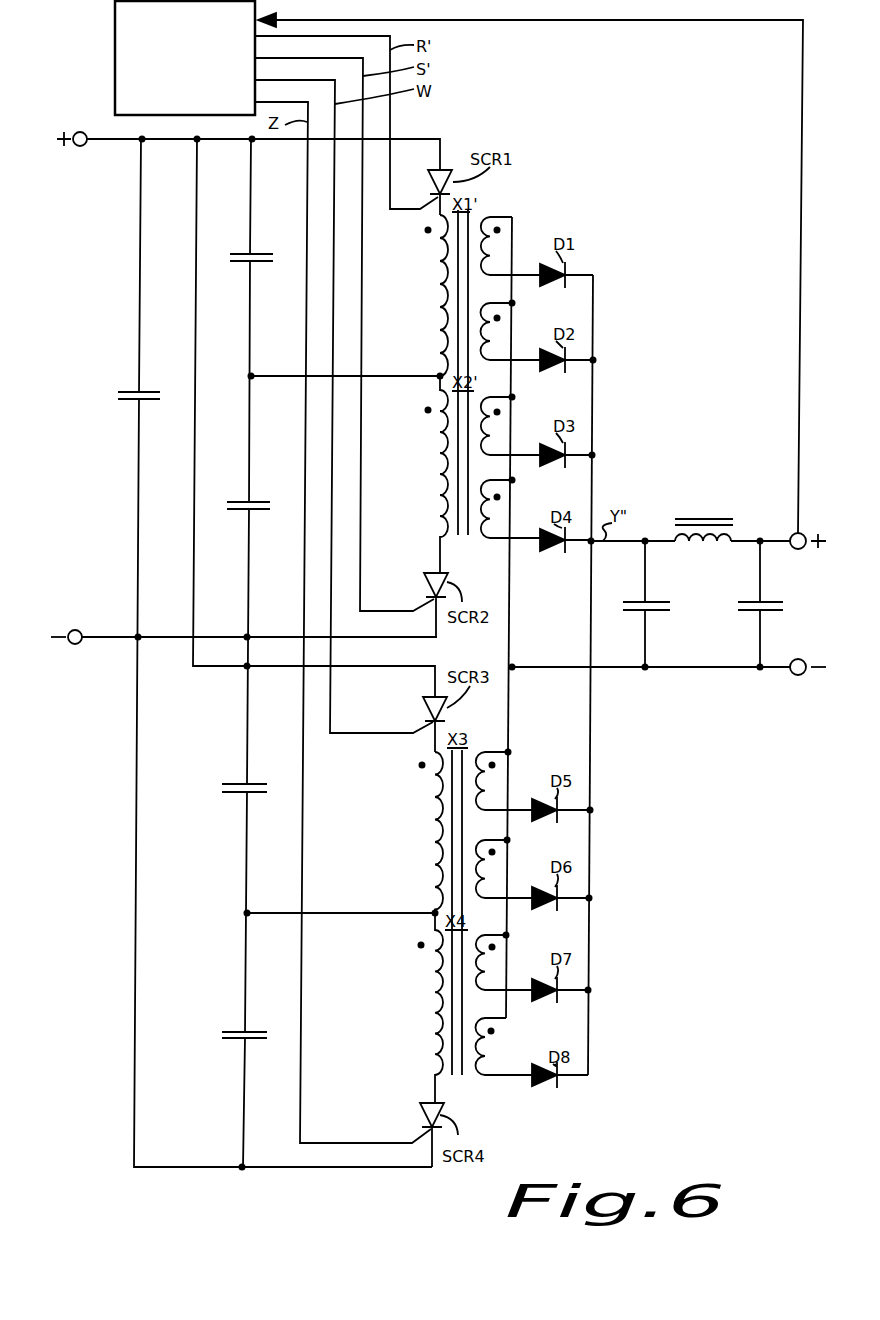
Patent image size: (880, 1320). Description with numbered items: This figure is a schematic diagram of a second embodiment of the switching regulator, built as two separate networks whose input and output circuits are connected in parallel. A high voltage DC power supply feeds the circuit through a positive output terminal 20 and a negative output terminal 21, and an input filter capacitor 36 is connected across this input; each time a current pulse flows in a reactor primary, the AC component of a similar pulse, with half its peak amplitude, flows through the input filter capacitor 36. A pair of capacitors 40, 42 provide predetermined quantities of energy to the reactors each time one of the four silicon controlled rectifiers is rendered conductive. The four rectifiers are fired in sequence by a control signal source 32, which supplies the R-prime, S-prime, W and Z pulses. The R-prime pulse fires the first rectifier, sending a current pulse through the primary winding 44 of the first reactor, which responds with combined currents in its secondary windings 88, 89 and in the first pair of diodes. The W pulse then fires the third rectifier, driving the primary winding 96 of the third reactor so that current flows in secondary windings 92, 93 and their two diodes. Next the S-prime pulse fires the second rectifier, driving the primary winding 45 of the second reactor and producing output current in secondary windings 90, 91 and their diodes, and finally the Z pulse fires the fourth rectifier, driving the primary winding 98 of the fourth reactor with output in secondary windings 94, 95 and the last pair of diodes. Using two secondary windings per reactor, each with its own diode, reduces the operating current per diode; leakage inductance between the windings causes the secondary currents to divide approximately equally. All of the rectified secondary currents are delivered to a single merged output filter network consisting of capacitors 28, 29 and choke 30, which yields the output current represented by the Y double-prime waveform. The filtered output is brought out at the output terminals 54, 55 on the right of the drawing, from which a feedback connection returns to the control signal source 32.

The control signal source 32 is at (115, 22).
The positive output terminal 20 is at (80, 131).
The negative output terminal 21 is at (74, 630).
The input filter capacitor 36 is at (117, 393).
The capacitor 40 is at (229, 257).
The capacitor 42 is at (227, 505).
The primary winding 44 is at (438, 291).
The primary winding 45 is at (438, 490).
The secondary winding 88 is at (513, 275).
The secondary winding 89 is at (509, 333).
The secondary winding 90 is at (508, 427).
The secondary winding 91 is at (508, 507).
The secondary winding 92 is at (505, 779).
The secondary winding 93 is at (505, 867).
The secondary winding 94 is at (505, 961).
The secondary winding 95 is at (503, 1046).
The primary winding 96 is at (436, 826).
The primary winding 98 is at (436, 1033).
The capacitor 28 is at (672, 609).
The capacitor 29 is at (785, 608).
The choke 30 is at (730, 524).
The positive output terminal 54 is at (805, 535).
The negative output terminal 55 is at (807, 675).